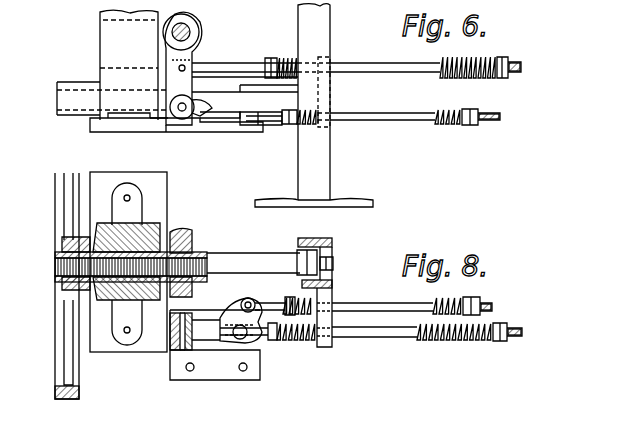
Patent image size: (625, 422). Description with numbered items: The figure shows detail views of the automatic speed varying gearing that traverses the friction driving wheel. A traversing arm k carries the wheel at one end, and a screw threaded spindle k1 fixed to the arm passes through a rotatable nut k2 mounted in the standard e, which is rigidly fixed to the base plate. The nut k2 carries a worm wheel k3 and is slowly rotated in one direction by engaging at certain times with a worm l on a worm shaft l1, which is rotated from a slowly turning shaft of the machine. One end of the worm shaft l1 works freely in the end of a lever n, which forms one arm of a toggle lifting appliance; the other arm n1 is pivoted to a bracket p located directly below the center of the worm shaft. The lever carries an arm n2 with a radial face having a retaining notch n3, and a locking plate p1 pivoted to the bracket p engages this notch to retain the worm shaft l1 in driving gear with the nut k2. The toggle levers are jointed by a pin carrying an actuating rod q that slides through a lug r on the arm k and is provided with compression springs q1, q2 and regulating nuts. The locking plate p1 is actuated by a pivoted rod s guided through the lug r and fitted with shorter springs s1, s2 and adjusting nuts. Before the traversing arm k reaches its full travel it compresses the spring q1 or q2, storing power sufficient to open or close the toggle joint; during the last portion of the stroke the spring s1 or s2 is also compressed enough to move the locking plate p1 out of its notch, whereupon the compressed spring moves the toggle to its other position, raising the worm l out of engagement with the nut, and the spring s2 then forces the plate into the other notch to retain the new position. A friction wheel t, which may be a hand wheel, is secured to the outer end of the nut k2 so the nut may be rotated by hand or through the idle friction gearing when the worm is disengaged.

In FIG. 6, the standard e is at (129, 65).
In FIG. 6, the traversing arm k is at (331, 162).
In FIG. 8, the traversing arm k is at (333, 260).
In FIG. 6, the screw threaded spindle k1 is at (262, 92).
In FIG. 8, the screw threaded spindle k1 is at (258, 258).
In FIG. 6, the rotatable nut k2 is at (80, 87).
In FIG. 8, the rotatable nut k2 is at (57, 276).
In FIG. 8, the worm wheel k3 is at (183, 240).
In FIG. 6, the worm l is at (200, 38).
In FIG. 8, the worm l is at (128, 262).
In FIG. 6, the worm shaft l1 is at (191, 32).
In FIG. 6, the lever n is at (194, 68).
In FIG. 6, the arm n1 is at (245, 81).
In FIG. 6, the arm n2 is at (182, 120).
In FIG. 8, the arm n2 is at (198, 320).
In FIG. 6, the retaining notch n3 is at (215, 120).
In FIG. 6, the bracket p is at (168, 126).
In FIG. 8, the bracket p is at (185, 348).
In FIG. 6, the locking plate p1 is at (254, 134).
In FIG. 8, the locking plate p1 is at (236, 308).
In FIG. 6, the actuating rod q is at (392, 74).
In FIG. 8, the actuating rod q is at (385, 338).
In FIG. 8, the compression spring q1 is at (290, 342).
In FIG. 6, the compression spring q2 is at (466, 78).
In FIG. 8, the compression spring q2 is at (455, 342).
In FIG. 6, the lug r is at (331, 90).
In FIG. 6, the rod s is at (392, 124).
In FIG. 8, the rod s is at (400, 304).
In FIG. 6, the spring s1 is at (318, 126).
In FIG. 8, the spring s1 is at (292, 300).
In FIG. 6, the spring s2 is at (447, 126).
In FIG. 8, the spring s2 is at (446, 300).
In FIG. 8, the friction wheel t is at (73, 380).